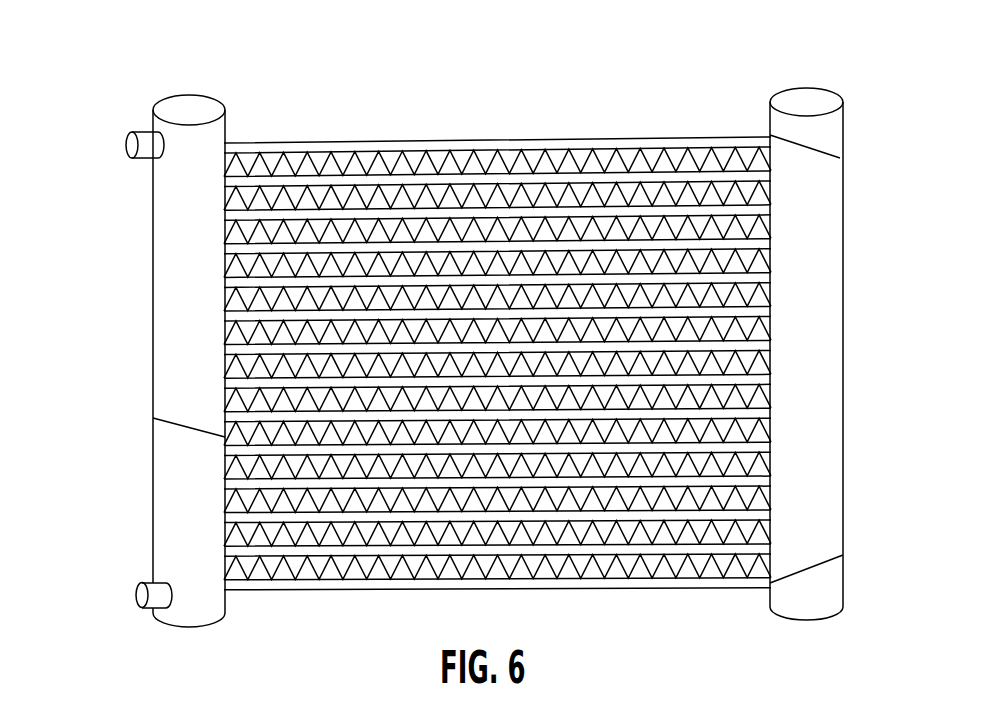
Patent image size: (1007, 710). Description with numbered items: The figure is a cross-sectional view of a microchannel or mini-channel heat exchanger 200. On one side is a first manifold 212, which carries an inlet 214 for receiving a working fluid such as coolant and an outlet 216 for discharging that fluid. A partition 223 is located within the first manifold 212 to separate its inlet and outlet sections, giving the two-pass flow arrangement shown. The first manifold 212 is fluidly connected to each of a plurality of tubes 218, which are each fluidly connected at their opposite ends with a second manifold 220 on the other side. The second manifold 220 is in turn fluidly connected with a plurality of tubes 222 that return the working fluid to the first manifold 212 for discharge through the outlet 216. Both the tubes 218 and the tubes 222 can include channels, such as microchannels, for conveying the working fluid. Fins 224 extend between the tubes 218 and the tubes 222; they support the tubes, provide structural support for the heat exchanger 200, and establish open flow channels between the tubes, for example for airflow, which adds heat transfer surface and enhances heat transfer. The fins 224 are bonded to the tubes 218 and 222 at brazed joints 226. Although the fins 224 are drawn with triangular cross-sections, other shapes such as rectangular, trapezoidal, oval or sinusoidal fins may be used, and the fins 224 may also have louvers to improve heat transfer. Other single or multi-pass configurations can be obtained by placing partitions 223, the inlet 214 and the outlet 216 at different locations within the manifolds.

The microchannel heat exchanger 200 is at (782, 68).
The first manifold 212 is at (160, 328).
The inlet 214 is at (128, 141).
The outlet 216 is at (138, 593).
The tubes 218 is at (352, 208).
The second manifold 220 is at (837, 208).
The tubes 222 is at (305, 583).
The partition 223 is at (192, 427).
The fins 224 is at (533, 148).
The brazed joints 226 is at (700, 162).